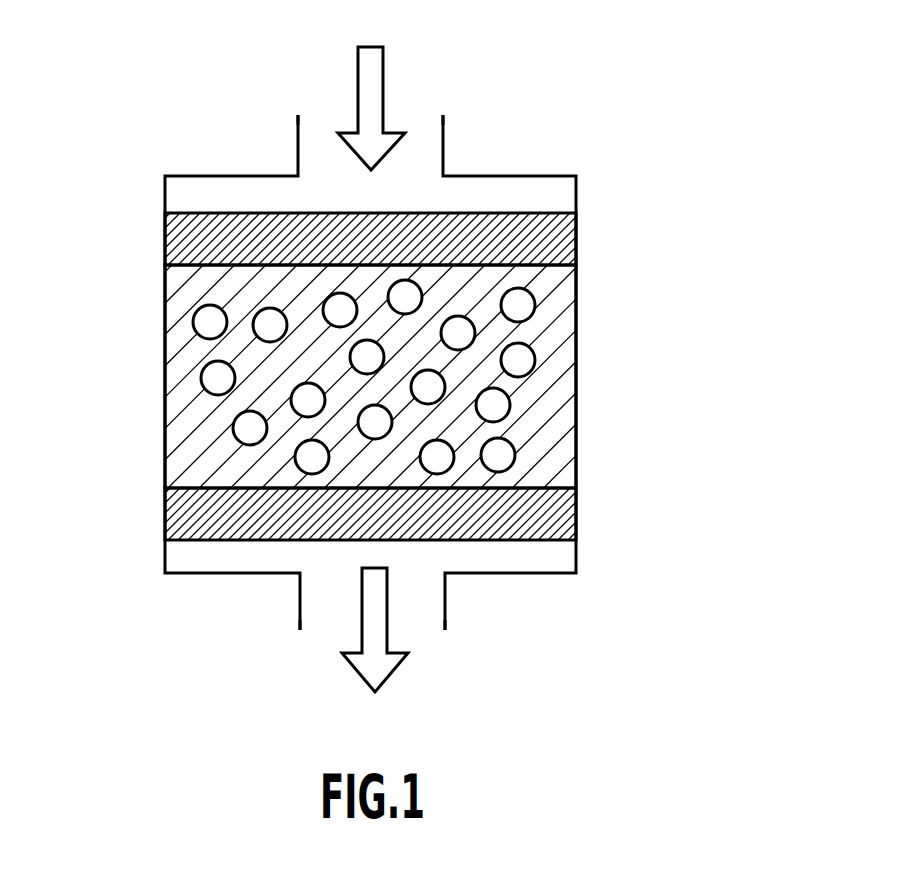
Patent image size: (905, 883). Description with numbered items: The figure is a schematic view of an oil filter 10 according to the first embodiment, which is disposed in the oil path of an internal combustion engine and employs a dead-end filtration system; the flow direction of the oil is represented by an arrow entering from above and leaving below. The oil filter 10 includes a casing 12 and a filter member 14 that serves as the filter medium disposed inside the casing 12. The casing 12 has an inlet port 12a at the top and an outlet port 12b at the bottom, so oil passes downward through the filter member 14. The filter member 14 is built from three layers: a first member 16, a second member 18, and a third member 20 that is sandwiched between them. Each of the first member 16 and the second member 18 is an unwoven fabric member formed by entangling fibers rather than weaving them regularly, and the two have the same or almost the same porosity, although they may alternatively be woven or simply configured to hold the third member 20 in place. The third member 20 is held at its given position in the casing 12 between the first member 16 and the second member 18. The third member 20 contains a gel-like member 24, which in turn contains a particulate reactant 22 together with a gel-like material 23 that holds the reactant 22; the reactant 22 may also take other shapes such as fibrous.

The oil filter 10 is at (695, 381).
The casing 12 is at (578, 570).
The inlet port 12a is at (430, 163).
The outlet port 12b is at (432, 587).
The filter member 14 is at (178, 442).
The first member 16 is at (556, 240).
The second member 18 is at (558, 515).
The third member 20 is at (556, 448).
The reactant 22 is at (520, 302).
The gel-like material 23 is at (556, 410).
The gel-like member 24 is at (556, 340).